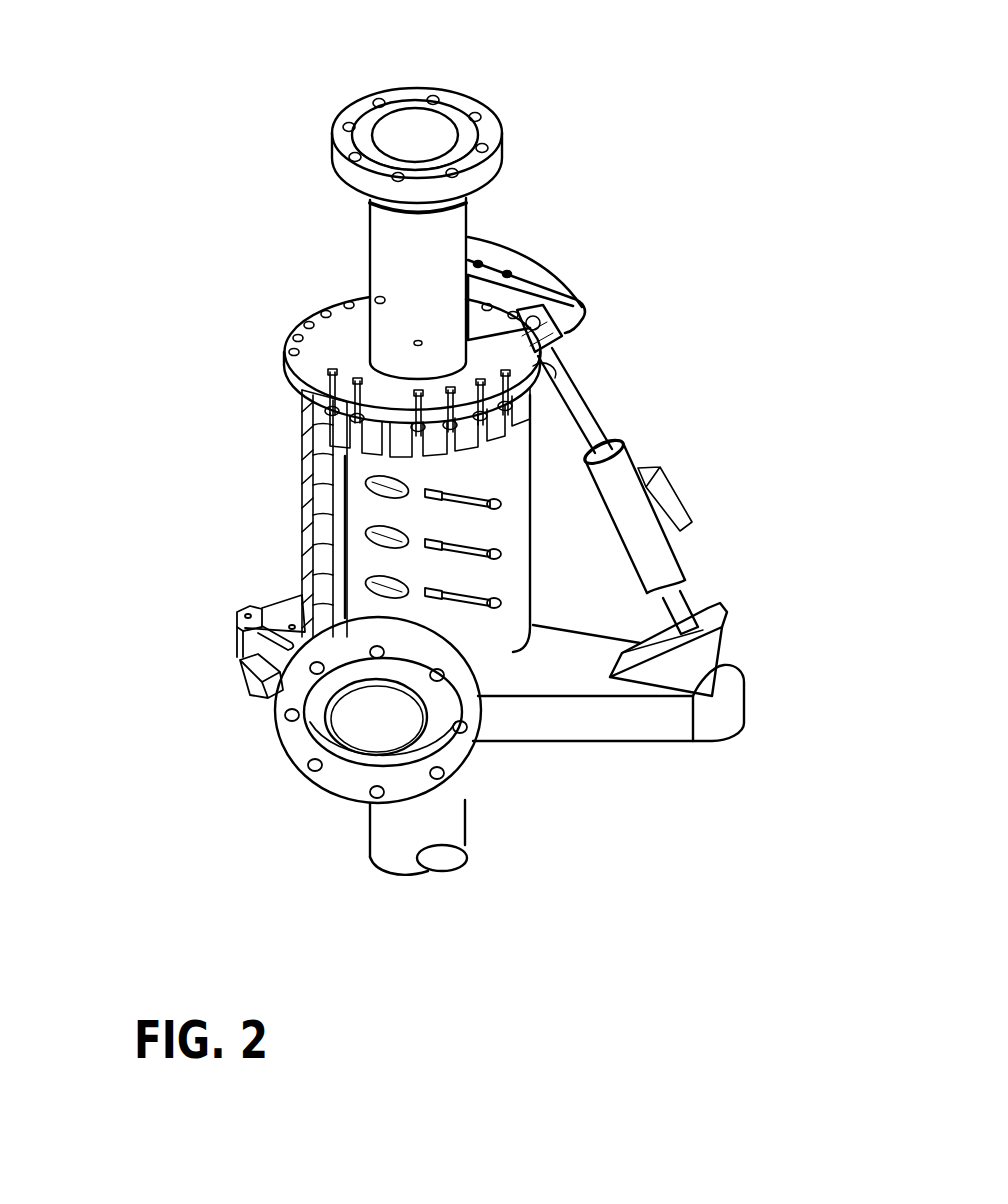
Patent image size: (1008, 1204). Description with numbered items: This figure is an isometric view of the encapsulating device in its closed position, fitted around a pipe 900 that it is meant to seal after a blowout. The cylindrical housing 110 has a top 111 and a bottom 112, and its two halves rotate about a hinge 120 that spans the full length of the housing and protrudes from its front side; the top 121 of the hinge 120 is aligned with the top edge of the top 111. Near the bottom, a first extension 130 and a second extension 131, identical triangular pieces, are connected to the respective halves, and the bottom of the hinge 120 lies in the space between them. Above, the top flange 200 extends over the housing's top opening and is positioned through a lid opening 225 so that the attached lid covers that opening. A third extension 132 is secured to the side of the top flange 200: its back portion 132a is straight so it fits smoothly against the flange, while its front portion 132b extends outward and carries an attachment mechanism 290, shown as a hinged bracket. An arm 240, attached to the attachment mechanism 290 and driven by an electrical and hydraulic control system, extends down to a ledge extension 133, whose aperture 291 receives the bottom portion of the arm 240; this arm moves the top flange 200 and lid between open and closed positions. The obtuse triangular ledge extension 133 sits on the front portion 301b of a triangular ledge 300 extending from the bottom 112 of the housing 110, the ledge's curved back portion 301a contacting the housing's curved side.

The top flange 200 is at (504, 117).
The top 111 is at (340, 326).
The back portion 132a is at (488, 305).
The third extension 132 is at (545, 280).
The front portion 132b is at (585, 297).
The attachment mechanism 290 is at (573, 340).
The lid opening 225 is at (560, 378).
The arm 240 is at (608, 415).
The aperture 291 is at (688, 620).
The ledge extension 133 is at (733, 639).
The top of the hinge 121 is at (290, 380).
The housing 110 is at (238, 476).
The hinge 120 is at (303, 543).
The first extension 130 is at (232, 642).
The back portion 301a is at (534, 653).
The ledge 300 is at (584, 678).
The front portion 301b is at (750, 705).
The second extension 131 is at (275, 758).
The bottom 112 is at (494, 754).
The pipe 900 is at (472, 822).